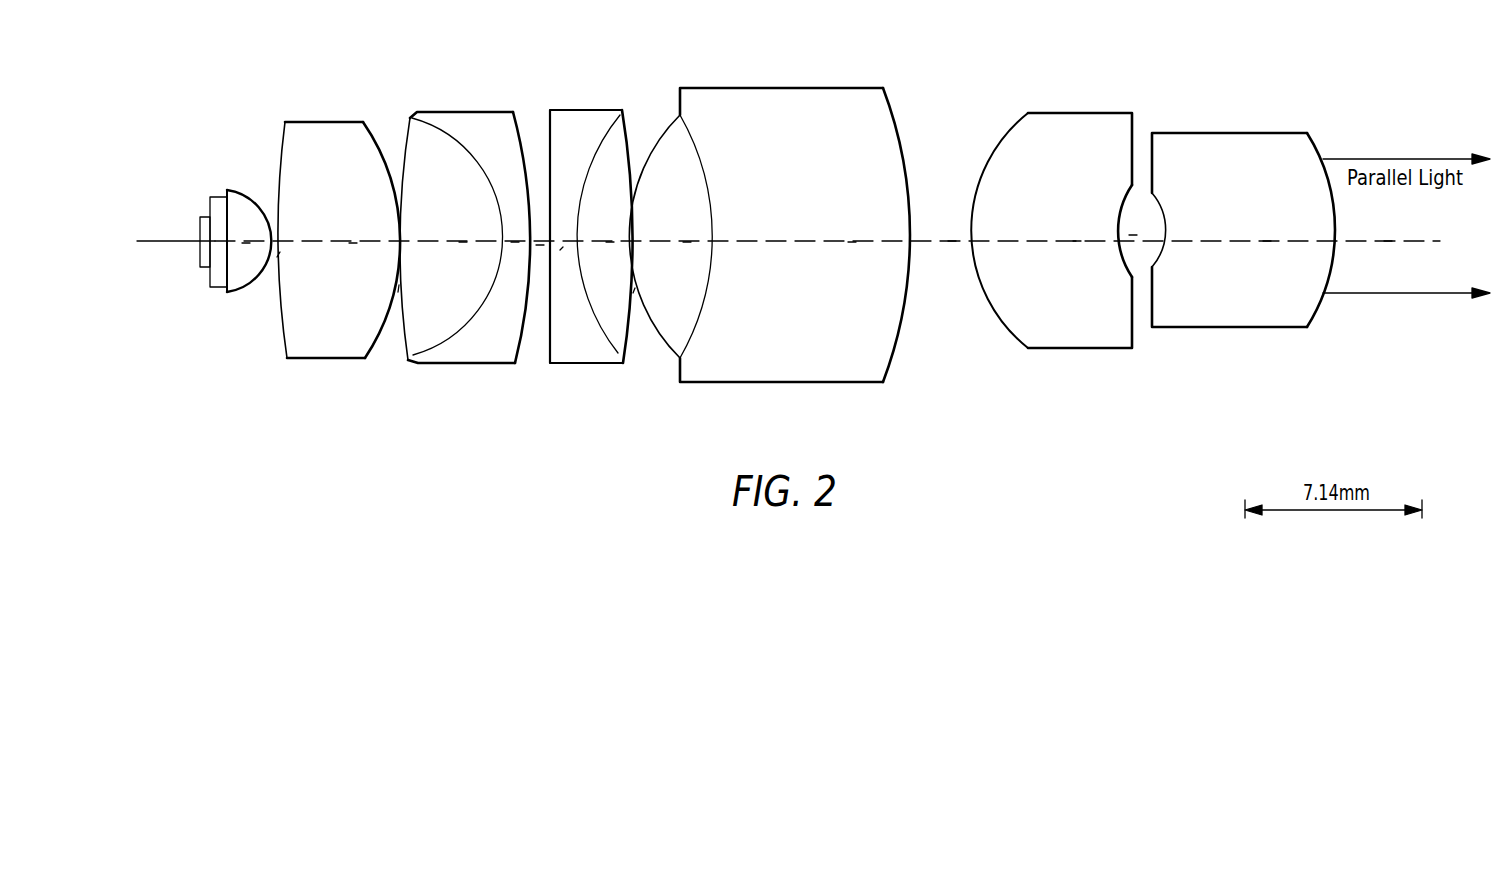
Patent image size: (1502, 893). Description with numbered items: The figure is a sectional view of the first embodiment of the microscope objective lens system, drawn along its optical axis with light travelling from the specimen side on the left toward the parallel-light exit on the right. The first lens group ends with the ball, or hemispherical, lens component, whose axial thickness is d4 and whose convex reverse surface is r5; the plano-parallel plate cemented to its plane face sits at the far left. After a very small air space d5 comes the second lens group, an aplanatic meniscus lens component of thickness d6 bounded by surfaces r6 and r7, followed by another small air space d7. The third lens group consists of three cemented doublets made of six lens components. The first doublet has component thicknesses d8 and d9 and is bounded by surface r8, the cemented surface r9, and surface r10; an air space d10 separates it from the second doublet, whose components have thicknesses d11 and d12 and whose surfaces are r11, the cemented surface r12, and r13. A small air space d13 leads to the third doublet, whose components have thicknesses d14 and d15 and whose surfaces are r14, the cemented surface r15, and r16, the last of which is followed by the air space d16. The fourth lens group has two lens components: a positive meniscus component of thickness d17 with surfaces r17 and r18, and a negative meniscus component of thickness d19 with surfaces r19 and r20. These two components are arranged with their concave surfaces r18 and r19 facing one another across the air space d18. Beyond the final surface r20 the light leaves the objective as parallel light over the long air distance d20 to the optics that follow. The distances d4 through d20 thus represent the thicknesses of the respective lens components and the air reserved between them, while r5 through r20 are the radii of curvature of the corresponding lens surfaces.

The reverse surface of ball lens component r5 is at (240, 190).
The first surface of aplanatic meniscus lens component r6 is at (283, 138).
The second surface of aplanatic meniscus lens component r7 is at (374, 120).
The first surface of first cemented doublet r8 is at (407, 128).
The cemented surface of first cemented doublet r9 is at (455, 130).
The rear surface of first cemented doublet r10 is at (523, 140).
The first surface of second cemented doublet r11 is at (550, 160).
The cemented surface of second cemented doublet r12 is at (602, 140).
The rear surface of second cemented doublet r13 is at (623, 145).
The first surface of third cemented doublet r14 is at (660, 130).
The cemented surface of third cemented doublet r15 is at (702, 167).
The rear surface of third cemented doublet r16 is at (892, 112).
The first surface of positive meniscus component r17 is at (993, 155).
The concave surface of positive meniscus component r18 is at (1122, 203).
The concave surface of negative meniscus component r19 is at (1155, 203).
The rear surface of negative meniscus component r20 is at (1313, 142).
The thickness of ball lens component d4 is at (247, 243).
The air space after ball lens component d5 is at (277, 257).
The thickness of aplanatic meniscus lens component d6 is at (353, 243).
The air space after aplanatic meniscus component d7 is at (398, 292).
The thickness of first component of first doublet d8 is at (463, 242).
The thickness of second component of first doublet d9 is at (515, 242).
The air space between first and second doublets d10 is at (540, 245).
The thickness of first component of second doublet d11 is at (560, 250).
The thickness of second component of second doublet d12 is at (610, 242).
The air space between second and third doublets d13 is at (633, 293).
The thickness of first component of third doublet d14 is at (687, 242).
The thickness of second component of third doublet d15 is at (852, 242).
The air space between third and fourth lens groups d16 is at (952, 241).
The thickness of positive meniscus component d17 is at (1077, 241).
The air space between meniscus components d18 is at (1133, 235).
The thickness of negative meniscus component d19 is at (1267, 241).
The air distance after negative meniscus component d20 is at (1388, 241).